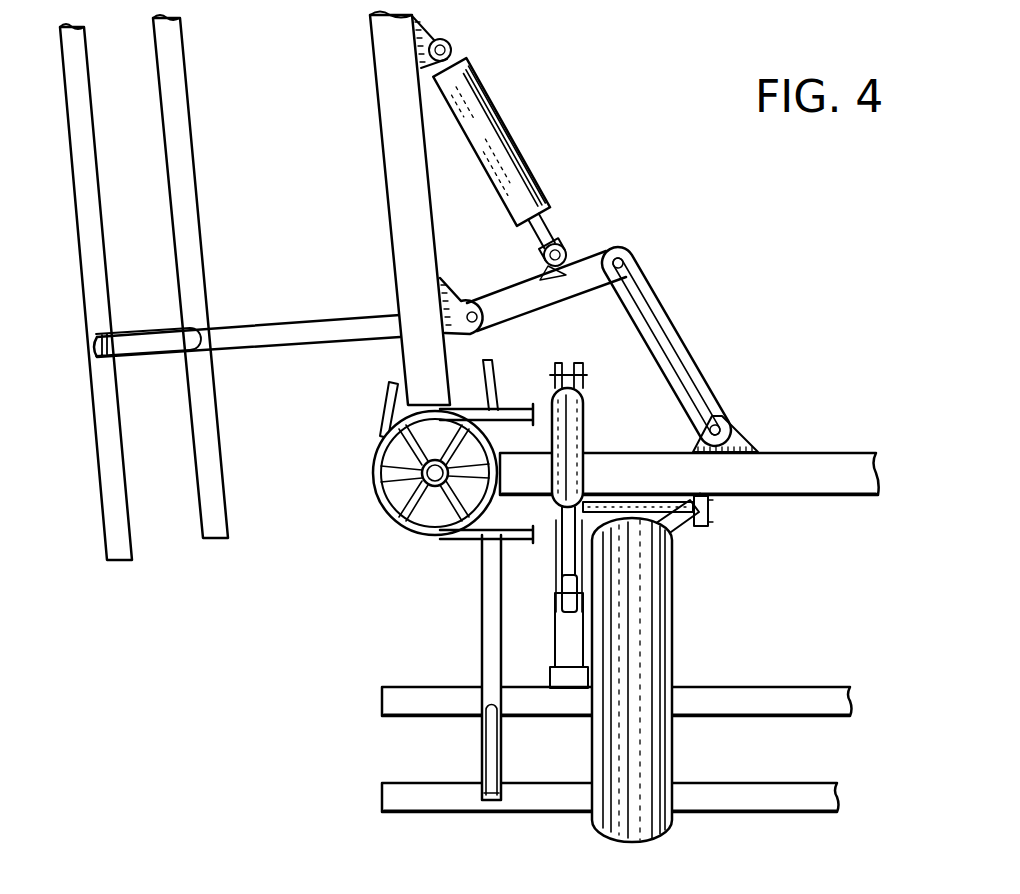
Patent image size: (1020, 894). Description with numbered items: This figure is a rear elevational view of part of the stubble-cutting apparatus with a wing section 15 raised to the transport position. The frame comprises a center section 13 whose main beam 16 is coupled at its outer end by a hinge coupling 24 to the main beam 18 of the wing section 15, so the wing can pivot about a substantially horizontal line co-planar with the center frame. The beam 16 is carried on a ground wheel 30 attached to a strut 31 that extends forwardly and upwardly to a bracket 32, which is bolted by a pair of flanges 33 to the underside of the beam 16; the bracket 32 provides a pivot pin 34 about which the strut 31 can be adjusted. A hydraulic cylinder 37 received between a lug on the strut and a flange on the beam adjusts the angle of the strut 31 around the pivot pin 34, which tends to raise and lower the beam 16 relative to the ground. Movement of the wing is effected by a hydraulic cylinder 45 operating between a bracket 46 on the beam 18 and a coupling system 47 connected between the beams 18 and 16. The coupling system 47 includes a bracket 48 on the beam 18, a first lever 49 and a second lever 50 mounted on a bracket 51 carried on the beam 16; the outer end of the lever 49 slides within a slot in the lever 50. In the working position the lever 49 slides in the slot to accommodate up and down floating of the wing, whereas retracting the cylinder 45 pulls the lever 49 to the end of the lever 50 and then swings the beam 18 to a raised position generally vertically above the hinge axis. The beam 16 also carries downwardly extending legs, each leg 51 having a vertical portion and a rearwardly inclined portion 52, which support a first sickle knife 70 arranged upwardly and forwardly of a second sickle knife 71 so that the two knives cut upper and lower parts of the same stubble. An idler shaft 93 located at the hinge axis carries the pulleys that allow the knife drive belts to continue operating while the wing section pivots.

The center section 13 is at (497, 528).
The wing section 15 is at (530, 141).
The main beam 16 is at (818, 468).
The main beam 18 is at (373, 136).
The hinge coupling 24 is at (412, 497).
The ground wheel 30 is at (681, 660).
The strut 31 is at (553, 639).
The bracket 32 is at (688, 532).
The flange 33 is at (708, 515).
The pivot pin 34 is at (668, 500).
The hydraulic cylinder 37 is at (589, 418).
The hydraulic cylinder 45 is at (510, 130).
The bracket 46 is at (433, 28).
The coupling system 47 is at (607, 317).
The bracket 48 is at (460, 298).
The first lever 49 is at (541, 294).
The second lever 50 is at (701, 340).
The bracket 51 is at (318, 318).
The inclined portion 52 is at (486, 727).
The first sickle knife 70 is at (221, 440).
The second sickle knife 71 is at (137, 528).
The idler shaft 93 is at (412, 470).